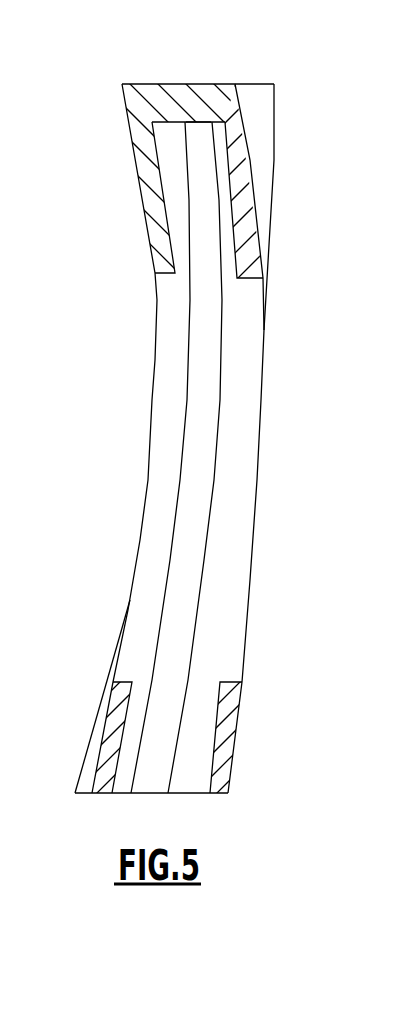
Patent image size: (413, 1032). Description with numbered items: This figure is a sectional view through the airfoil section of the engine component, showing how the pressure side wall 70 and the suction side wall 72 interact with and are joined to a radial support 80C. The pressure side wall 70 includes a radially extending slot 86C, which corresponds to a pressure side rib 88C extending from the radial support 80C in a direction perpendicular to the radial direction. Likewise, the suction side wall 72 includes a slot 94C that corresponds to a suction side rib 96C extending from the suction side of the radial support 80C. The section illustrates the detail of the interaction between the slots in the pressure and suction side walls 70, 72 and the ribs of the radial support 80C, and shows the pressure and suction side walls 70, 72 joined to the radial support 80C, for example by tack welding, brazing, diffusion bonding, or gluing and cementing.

The pressure side wall 70 is at (140, 165).
The suction side wall 72 is at (275, 165).
The radial support 80C is at (197, 145).
The slot 86C is at (158, 297).
The pressure side rib 88C is at (165, 415).
The slot 94C is at (262, 387).
The suction side rib 96C is at (245, 435).